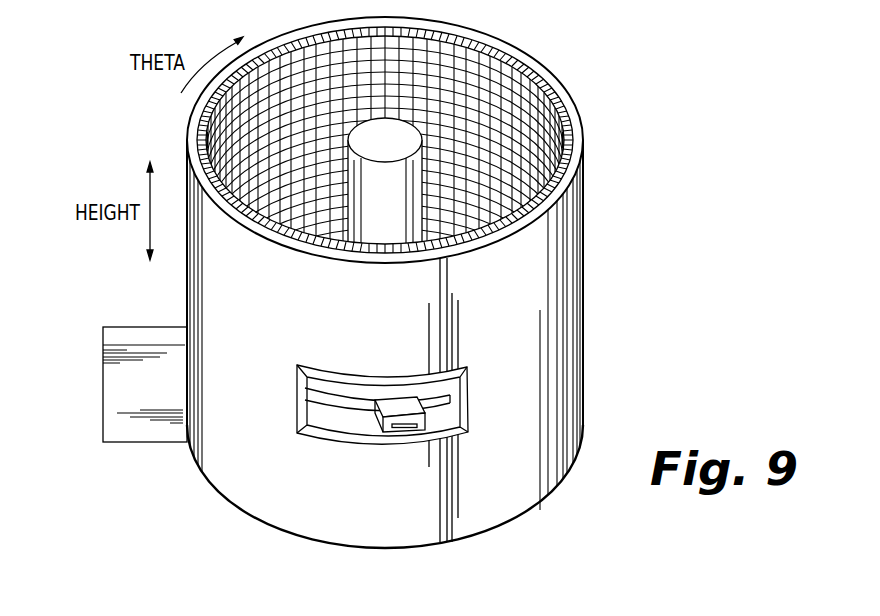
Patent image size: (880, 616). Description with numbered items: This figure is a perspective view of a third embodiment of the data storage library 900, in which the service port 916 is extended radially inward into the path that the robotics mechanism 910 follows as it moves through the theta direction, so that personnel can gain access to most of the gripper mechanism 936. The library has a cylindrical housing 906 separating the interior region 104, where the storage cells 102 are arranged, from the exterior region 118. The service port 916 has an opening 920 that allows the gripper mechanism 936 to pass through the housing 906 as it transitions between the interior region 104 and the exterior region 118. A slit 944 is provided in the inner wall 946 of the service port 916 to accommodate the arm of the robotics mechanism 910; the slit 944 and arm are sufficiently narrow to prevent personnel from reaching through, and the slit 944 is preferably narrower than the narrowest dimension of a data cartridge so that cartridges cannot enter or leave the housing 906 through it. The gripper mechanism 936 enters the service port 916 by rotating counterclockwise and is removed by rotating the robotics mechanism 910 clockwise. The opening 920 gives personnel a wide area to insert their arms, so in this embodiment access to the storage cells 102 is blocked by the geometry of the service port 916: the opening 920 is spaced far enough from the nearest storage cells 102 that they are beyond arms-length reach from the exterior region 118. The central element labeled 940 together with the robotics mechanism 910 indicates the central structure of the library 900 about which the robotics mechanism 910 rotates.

The storage cells 102 is at (507, 57).
The interior region 104 is at (492, 106).
The exterior region 118 is at (691, 372).
The data storage library 900 is at (593, 270).
The housing 906 is at (560, 220).
The robotics mechanism 910 is at (373, 330).
The service port 916 is at (373, 400).
The opening 920 is at (298, 400).
The gripper mechanism 936 is at (442, 411).
The central tube 940 is at (373, 216).
The slit 944 is at (339, 398).
The inner wall 946 is at (443, 382).